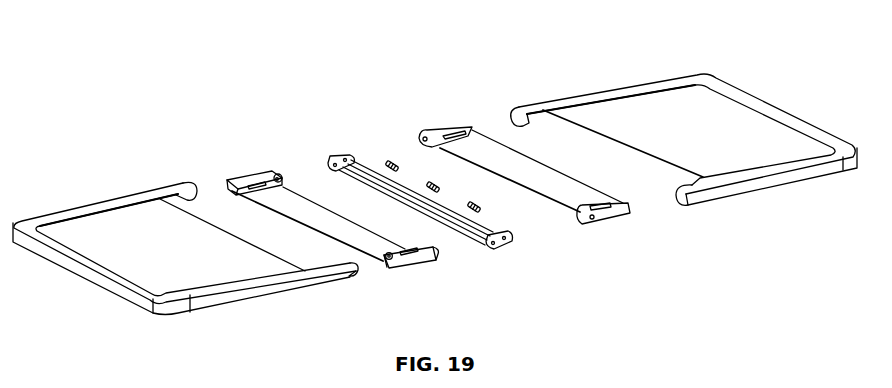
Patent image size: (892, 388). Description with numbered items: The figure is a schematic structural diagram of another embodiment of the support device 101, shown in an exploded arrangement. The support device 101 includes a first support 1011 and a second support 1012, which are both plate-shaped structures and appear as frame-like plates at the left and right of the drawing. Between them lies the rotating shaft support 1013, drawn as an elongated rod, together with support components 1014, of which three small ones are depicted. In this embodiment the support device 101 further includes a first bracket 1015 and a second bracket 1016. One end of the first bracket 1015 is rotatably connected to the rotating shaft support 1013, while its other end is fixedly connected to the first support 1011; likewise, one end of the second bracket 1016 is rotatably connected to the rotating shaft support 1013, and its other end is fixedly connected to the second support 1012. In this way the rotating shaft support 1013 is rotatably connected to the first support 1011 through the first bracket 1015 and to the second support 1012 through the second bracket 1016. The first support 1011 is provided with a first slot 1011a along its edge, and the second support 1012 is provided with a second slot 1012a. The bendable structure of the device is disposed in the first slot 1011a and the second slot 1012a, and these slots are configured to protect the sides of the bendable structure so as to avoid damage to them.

The support device 101 is at (435, 184).
The first support 1011 is at (122, 223).
The first slot 1011a is at (79, 219).
The second support 1012 is at (652, 118).
The second slot 1012a is at (664, 91).
The rotating shaft support 1013 is at (336, 153).
The support component 1014 is at (393, 160).
The first bracket 1015 is at (281, 195).
The second bracket 1016 is at (488, 153).